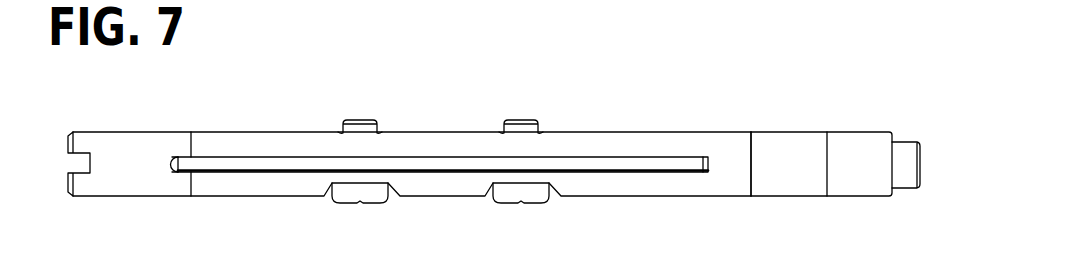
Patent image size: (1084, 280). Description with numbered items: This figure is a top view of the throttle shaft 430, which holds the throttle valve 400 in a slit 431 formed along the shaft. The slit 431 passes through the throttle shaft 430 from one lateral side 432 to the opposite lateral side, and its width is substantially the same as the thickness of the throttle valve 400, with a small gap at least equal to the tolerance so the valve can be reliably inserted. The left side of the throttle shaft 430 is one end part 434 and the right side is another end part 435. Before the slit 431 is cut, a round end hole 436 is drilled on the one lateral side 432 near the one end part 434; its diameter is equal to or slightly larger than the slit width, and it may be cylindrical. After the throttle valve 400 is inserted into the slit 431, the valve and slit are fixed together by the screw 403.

The throttle valve 400 is at (275, 160).
The screw 403 is at (540, 202).
The throttle shaft 430 is at (710, 197).
The slit 431 is at (640, 157).
The one lateral side 432 is at (730, 160).
The one end part 434 is at (69, 183).
The another end part 435 is at (922, 160).
The round end hole 436 is at (168, 153).